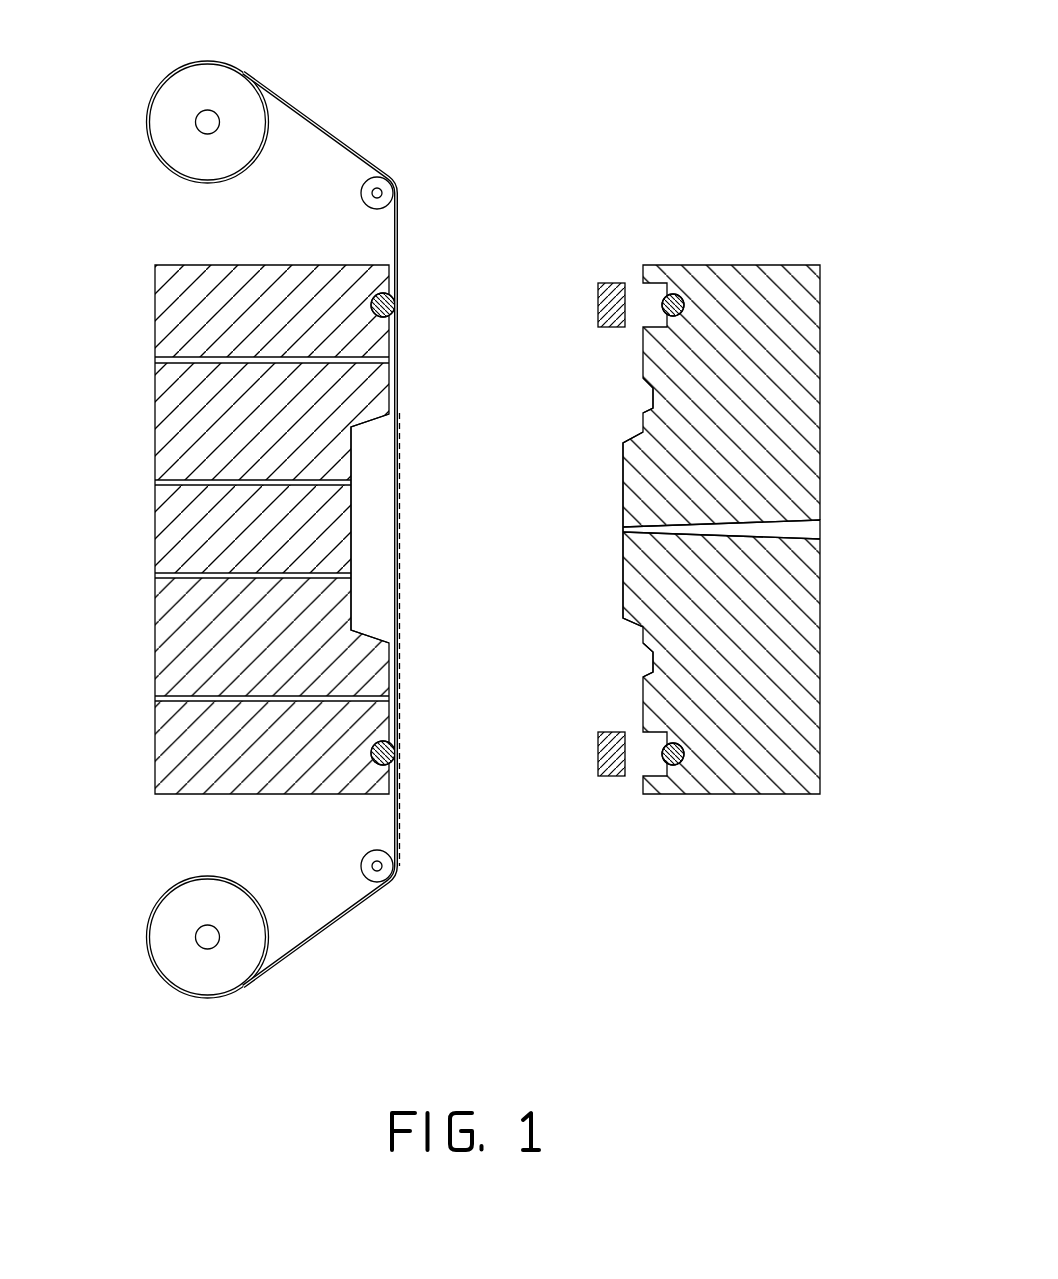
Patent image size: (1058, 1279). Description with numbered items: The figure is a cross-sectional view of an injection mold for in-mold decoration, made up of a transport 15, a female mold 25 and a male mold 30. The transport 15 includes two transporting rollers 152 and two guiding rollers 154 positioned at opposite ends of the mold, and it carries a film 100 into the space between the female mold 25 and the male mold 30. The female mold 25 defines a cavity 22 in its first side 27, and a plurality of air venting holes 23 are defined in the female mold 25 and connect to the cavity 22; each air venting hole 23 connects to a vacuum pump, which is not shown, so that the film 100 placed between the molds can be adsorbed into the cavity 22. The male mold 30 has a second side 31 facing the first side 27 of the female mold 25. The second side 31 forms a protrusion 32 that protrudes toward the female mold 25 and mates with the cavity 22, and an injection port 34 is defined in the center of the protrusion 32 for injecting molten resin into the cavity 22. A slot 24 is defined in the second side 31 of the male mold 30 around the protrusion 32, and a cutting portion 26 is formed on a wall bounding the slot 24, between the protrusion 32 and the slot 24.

The transport 15 is at (320, 104).
The film 100 is at (333, 137).
The transporting roller 152 is at (217, 83).
The guiding roller 154 is at (388, 190).
The female mold 25 is at (176, 398).
The first side 27 is at (390, 345).
The air venting hole 23 is at (187, 483).
The cavity 22 is at (364, 491).
The male mold 30 is at (802, 299).
The slot 24 is at (650, 393).
The cutting portion 26 is at (652, 410).
The injection port 34 is at (808, 532).
The protrusion 32 is at (623, 580).
The second side 31 is at (643, 700).